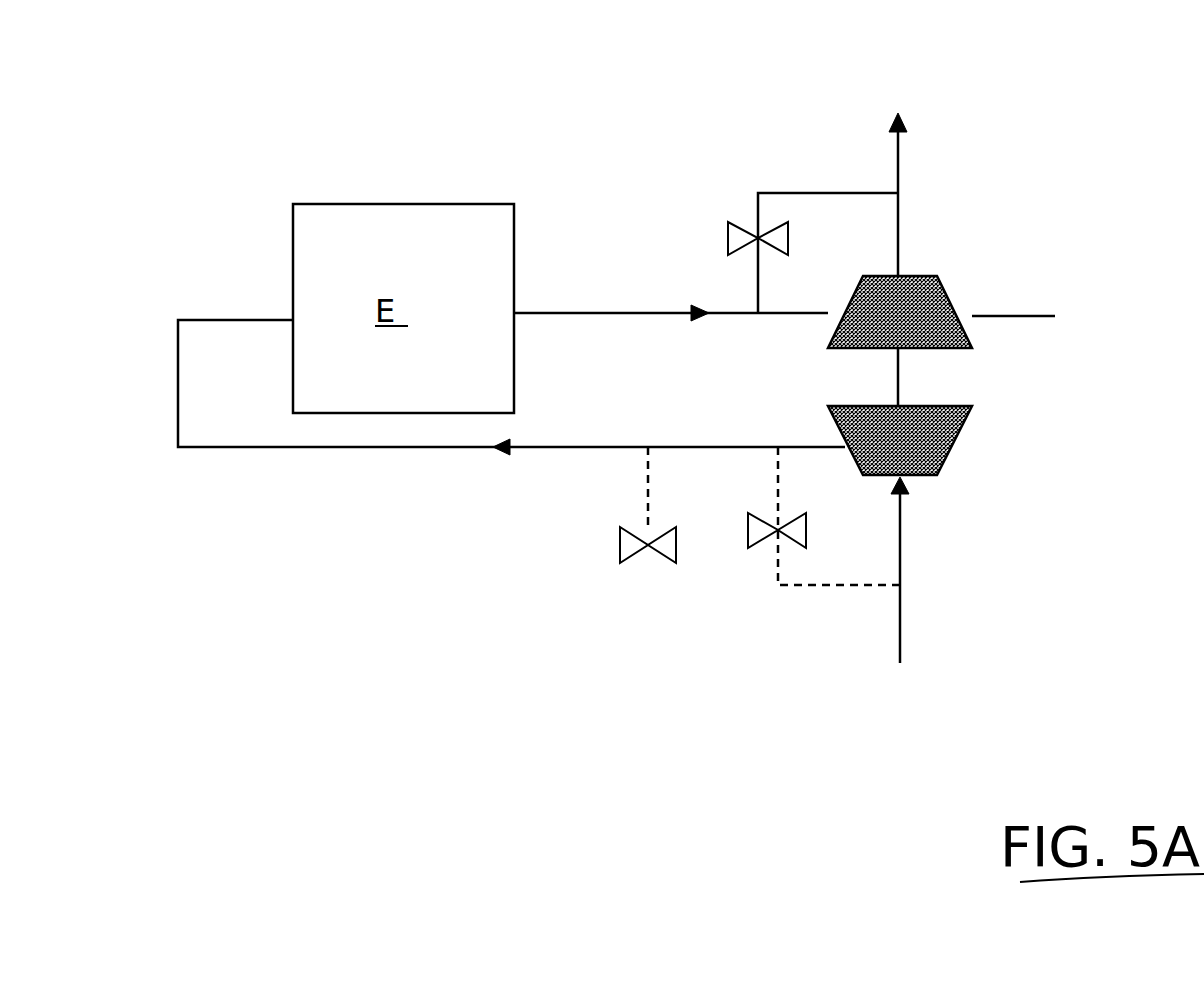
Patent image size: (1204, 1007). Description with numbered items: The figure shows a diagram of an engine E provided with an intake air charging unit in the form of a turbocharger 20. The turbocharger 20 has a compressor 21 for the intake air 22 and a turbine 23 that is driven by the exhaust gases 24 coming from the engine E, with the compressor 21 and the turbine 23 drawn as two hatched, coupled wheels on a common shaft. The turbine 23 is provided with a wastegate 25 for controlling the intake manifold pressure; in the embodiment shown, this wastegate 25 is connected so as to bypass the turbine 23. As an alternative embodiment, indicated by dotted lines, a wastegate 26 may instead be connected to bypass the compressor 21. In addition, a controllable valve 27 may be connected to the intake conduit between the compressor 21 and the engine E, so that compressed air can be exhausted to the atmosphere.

The turbocharger 20 is at (804, 317).
The compressor 21 is at (965, 432).
The intake air 22 is at (900, 623).
The turbine 23 is at (804, 312).
The exhaust gases 24 is at (900, 155).
The wastegate 25 is at (757, 237).
The wastegate 26 is at (763, 540).
The controllable valve 27 is at (625, 548).